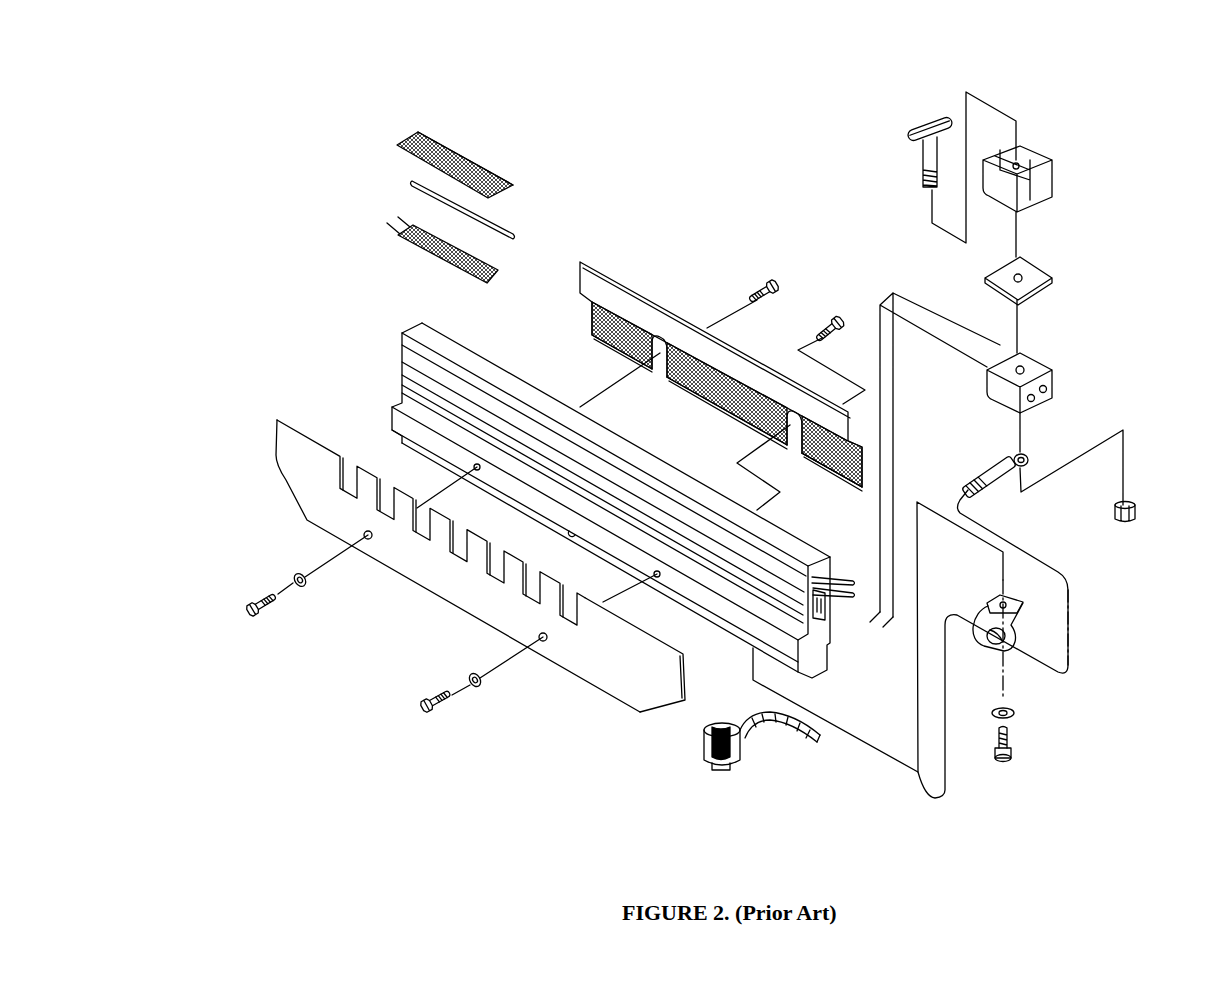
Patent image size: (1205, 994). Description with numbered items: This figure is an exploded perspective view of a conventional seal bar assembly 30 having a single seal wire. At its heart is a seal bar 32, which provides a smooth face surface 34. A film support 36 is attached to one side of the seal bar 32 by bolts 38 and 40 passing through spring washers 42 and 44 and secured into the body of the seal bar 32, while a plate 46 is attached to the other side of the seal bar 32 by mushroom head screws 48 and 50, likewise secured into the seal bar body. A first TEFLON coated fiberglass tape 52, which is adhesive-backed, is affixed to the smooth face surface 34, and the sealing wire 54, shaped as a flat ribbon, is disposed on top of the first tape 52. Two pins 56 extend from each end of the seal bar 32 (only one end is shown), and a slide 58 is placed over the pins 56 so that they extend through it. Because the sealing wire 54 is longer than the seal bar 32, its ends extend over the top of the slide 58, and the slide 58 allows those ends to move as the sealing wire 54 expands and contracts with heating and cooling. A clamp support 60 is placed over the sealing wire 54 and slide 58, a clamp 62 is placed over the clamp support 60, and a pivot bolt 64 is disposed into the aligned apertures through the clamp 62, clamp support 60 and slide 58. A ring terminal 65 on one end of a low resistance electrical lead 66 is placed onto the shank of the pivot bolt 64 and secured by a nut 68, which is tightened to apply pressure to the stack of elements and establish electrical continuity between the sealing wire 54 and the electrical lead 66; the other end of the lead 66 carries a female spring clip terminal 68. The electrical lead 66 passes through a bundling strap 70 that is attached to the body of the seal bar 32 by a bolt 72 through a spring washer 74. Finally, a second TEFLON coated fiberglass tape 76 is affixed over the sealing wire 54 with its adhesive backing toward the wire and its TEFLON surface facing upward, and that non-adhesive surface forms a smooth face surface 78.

The seal bar assembly 30 is at (476, 73).
The seal bar 32 is at (402, 390).
The smooth face surface 34 is at (487, 372).
The film support 36 is at (573, 650).
The bolt 38 is at (245, 613).
The bolt 40 is at (420, 712).
The spring washer 42 is at (295, 577).
The spring washer 44 is at (480, 688).
The plate 46 is at (620, 298).
The mushroom head screw 48 is at (768, 283).
The mushroom head screw 50 is at (841, 316).
The first TEFLON coated fiberglass tape 52 is at (427, 255).
The sealing wire 54 is at (412, 183).
The pins 56 is at (840, 592).
The slide 58 is at (1052, 378).
The clamp support 60 is at (1035, 278).
The clamp 62 is at (1048, 170).
The pivot bolt 64 is at (910, 135).
The ring terminal 65 is at (1007, 458).
The low resistance electrical lead 66 is at (947, 778).
The nut 68 is at (1130, 523).
The bundling strap 70 is at (1027, 610).
The bolt 72 is at (1015, 742).
The spring washer 74 is at (1017, 716).
The second TEFLON coated fiberglass tape 76 is at (397, 145).
The smooth face surface 78 is at (463, 157).